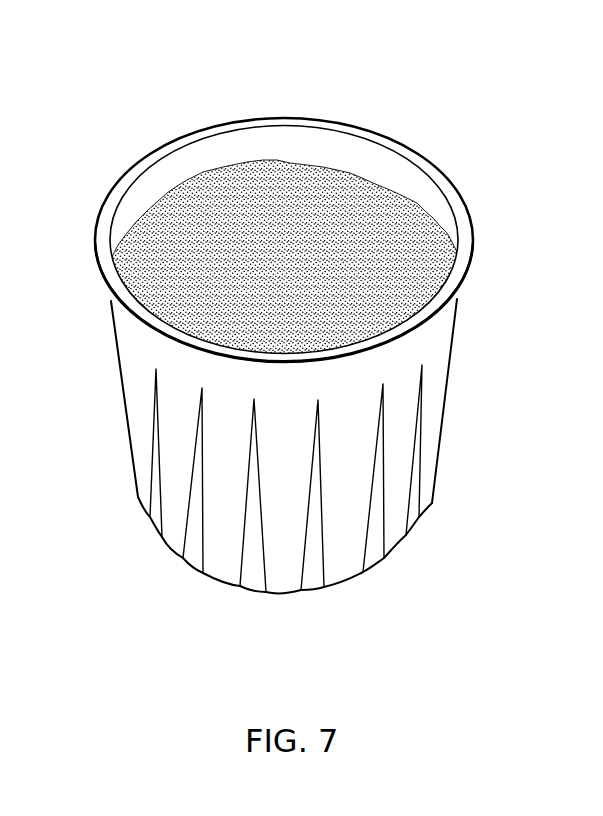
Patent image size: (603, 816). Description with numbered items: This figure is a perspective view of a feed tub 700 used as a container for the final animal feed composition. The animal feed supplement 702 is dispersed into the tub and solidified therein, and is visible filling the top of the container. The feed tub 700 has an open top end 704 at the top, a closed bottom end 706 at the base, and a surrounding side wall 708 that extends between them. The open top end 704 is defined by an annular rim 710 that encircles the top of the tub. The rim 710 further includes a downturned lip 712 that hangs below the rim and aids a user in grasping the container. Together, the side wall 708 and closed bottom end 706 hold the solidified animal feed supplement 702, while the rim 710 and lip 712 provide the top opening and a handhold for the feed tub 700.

The feed tub 700 is at (250, 75).
The animal feed supplement 702 is at (402, 217).
The open top end 704 is at (353, 157).
The closed bottom end 706 is at (392, 556).
The surrounding side wall 708 is at (442, 408).
The annular rim 710 is at (470, 214).
The downturned lip 712 is at (473, 262).